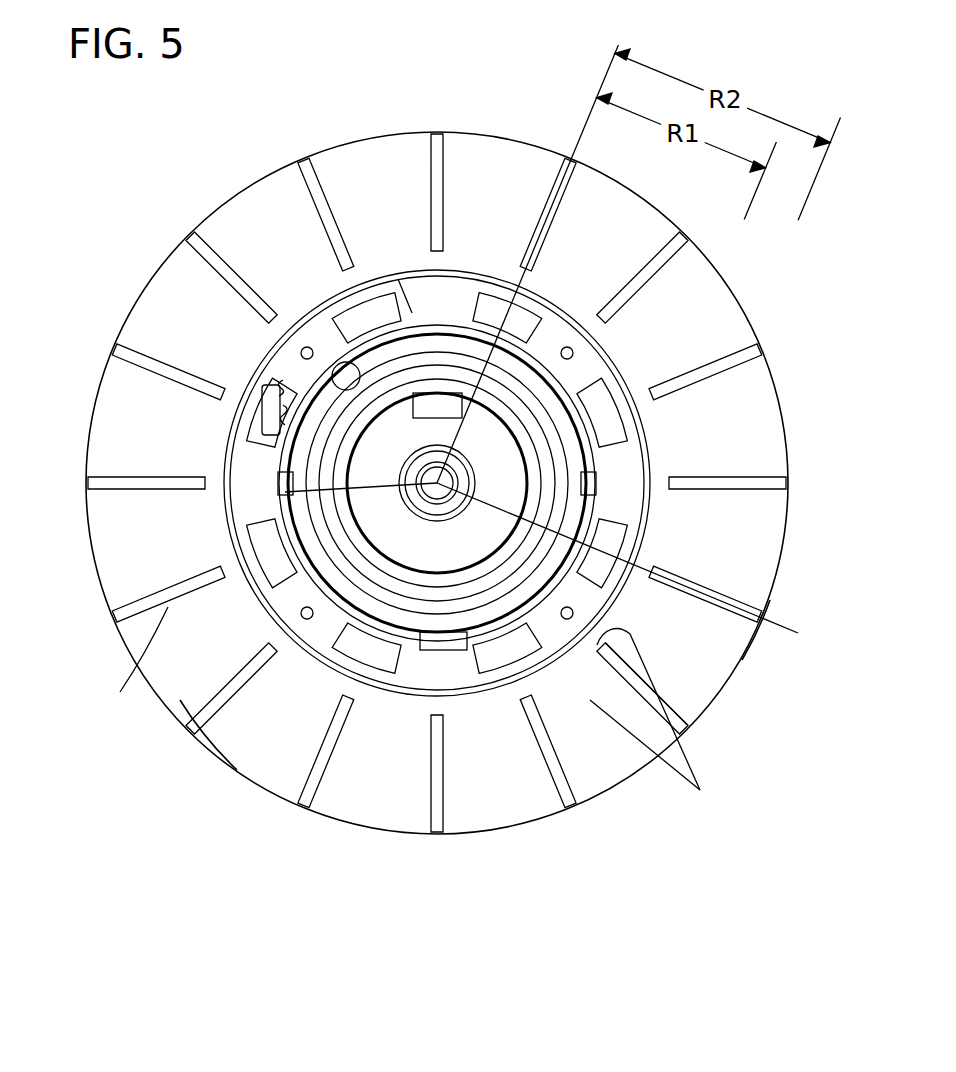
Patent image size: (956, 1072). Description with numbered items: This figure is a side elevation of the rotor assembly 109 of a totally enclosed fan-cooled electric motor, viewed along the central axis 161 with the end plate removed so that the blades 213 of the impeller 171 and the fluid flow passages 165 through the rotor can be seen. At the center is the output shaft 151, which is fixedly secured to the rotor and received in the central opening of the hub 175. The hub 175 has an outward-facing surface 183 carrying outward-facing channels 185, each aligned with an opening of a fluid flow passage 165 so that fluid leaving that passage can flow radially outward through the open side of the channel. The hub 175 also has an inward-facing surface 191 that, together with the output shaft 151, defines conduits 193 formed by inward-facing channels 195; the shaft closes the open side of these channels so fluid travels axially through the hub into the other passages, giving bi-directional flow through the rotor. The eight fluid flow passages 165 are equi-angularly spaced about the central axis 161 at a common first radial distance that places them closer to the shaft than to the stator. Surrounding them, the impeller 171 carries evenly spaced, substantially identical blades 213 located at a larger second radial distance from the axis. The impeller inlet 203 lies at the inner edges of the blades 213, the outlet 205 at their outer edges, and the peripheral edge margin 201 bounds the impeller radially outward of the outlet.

The rotor assembly 109 is at (343, 93).
The output shaft 151 is at (290, 474).
The central axis 161 is at (437, 483).
The fluid flow passages 165 is at (268, 400).
The impeller 171 is at (258, 787).
The hub 175 is at (452, 697).
The outward-facing surface 183 is at (392, 672).
The outward-facing channel 185 is at (540, 647).
The inward-facing surface 191 is at (273, 387).
The conduits 193 is at (300, 490).
The inward-facing channels 195 is at (287, 417).
The peripheral edge margin 201 is at (237, 770).
The inlet 203 is at (712, 692).
The outlet 205 is at (742, 660).
The blades 213 is at (168, 607).